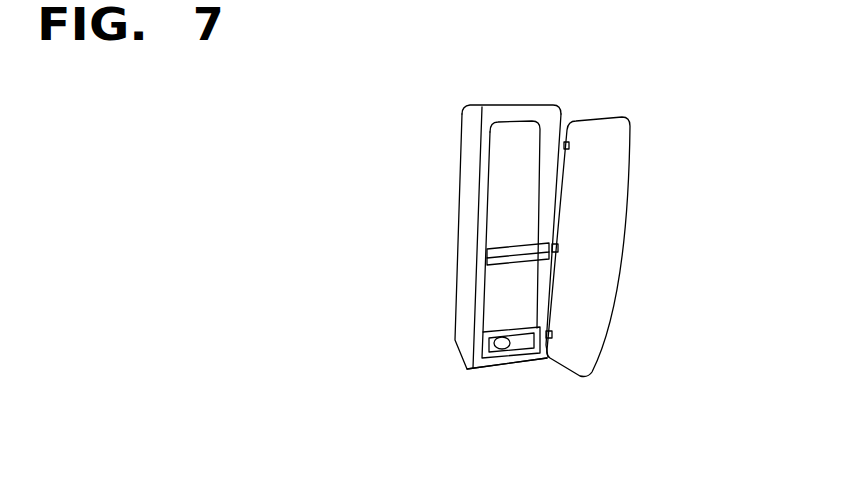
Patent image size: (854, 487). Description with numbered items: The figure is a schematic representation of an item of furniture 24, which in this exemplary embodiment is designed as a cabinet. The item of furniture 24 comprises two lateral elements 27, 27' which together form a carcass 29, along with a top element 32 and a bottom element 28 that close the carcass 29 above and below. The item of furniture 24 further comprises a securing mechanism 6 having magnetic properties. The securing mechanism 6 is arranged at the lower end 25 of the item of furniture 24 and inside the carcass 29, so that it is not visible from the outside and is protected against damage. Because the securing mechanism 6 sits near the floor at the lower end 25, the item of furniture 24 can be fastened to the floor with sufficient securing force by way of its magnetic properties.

The carcass 29 is at (444, 135).
The top element 32 is at (508, 104).
The lateral element 27 is at (455, 238).
The lateral element 27' is at (547, 189).
The item of furniture 24 is at (667, 141).
The securing mechanism 6 is at (490, 338).
The lower end 25 is at (514, 371).
The bottom element 28 is at (520, 343).